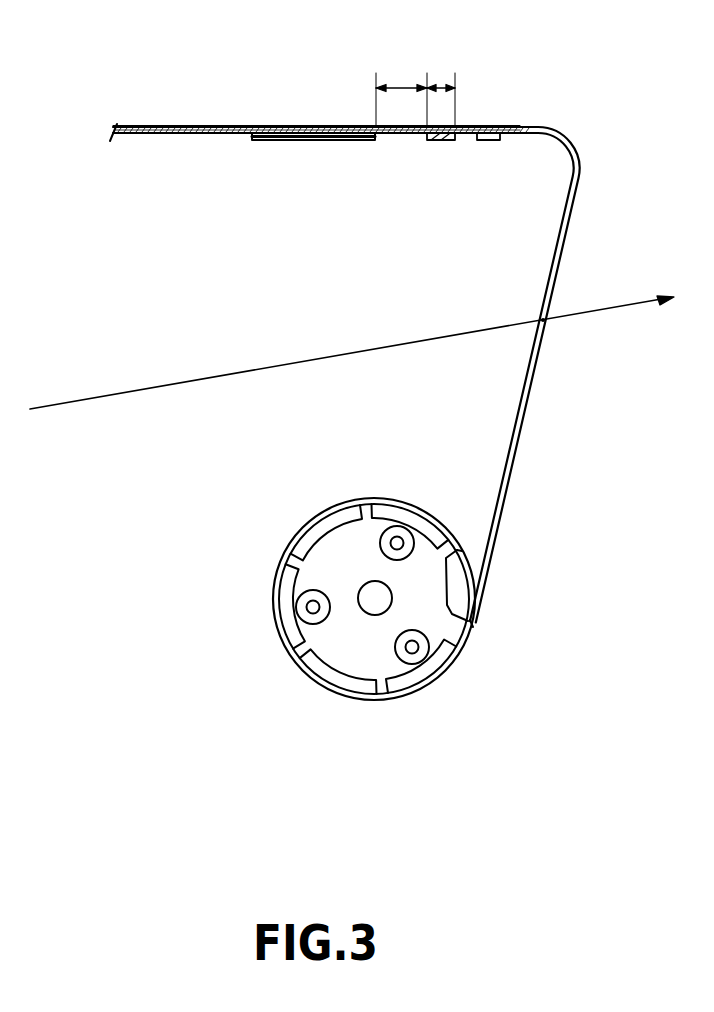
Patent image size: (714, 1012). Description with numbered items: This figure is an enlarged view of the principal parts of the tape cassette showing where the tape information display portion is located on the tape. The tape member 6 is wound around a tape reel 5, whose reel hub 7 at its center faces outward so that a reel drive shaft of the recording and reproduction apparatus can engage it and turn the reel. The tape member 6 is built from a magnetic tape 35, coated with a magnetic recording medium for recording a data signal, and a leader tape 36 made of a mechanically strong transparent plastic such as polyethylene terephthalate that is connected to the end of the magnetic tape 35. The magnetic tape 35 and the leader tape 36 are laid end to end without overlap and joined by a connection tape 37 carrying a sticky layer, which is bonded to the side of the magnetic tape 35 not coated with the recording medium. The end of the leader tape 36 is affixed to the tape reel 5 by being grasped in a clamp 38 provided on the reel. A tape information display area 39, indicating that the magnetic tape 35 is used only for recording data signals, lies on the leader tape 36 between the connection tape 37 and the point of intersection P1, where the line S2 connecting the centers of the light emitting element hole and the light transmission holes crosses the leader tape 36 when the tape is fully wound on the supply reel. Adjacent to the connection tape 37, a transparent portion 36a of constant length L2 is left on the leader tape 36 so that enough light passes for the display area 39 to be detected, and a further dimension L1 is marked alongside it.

The tape reel 5 is at (348, 693).
The tape member 6 is at (143, 128).
The reel hub 7 is at (332, 645).
The magnetic tape 35 is at (200, 128).
The leader tape 36 is at (562, 138).
The transparent portion 36a is at (403, 136).
The connection tape 37 is at (343, 139).
The clamp 38 is at (465, 590).
The tape information display area 39 is at (438, 139).
The length L1 is at (441, 91).
The length of transparent portion L2 is at (401, 91).
The point of intersection P1 is at (545, 322).
The line S2 is at (362, 352).